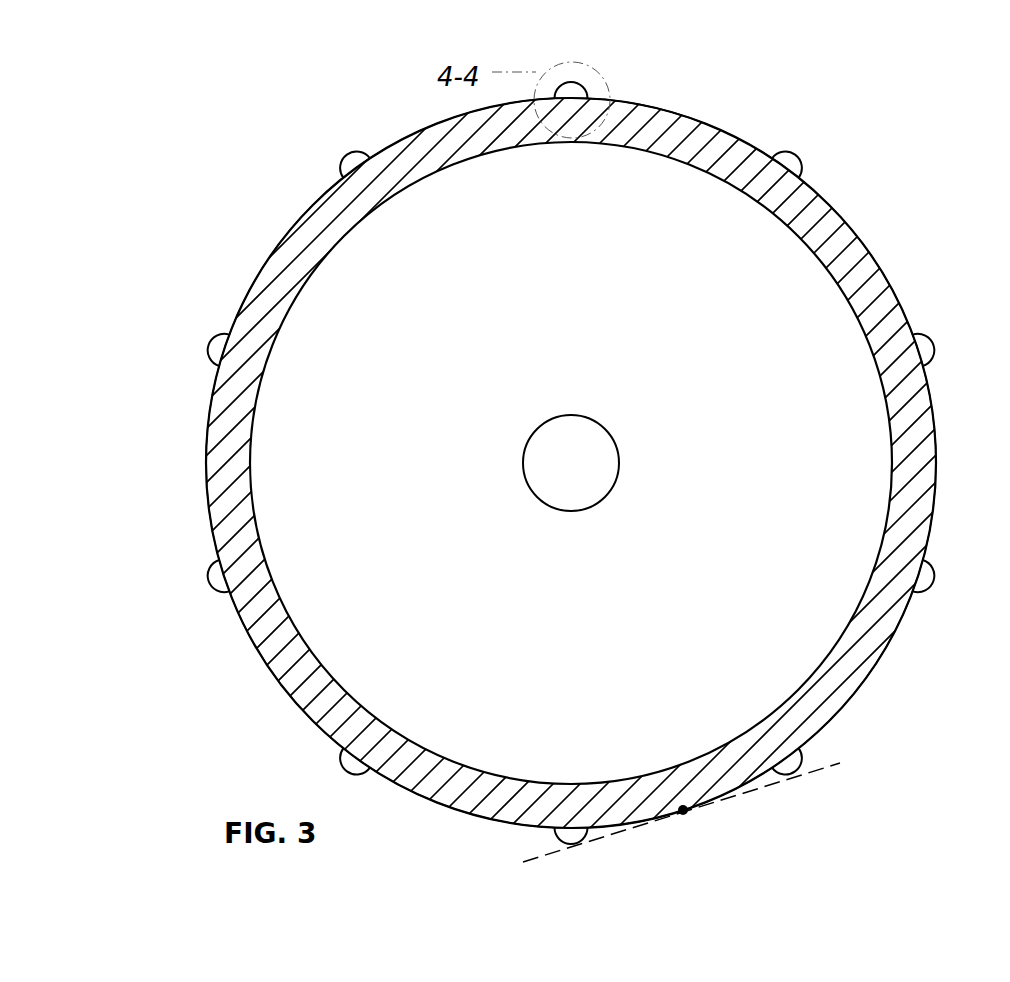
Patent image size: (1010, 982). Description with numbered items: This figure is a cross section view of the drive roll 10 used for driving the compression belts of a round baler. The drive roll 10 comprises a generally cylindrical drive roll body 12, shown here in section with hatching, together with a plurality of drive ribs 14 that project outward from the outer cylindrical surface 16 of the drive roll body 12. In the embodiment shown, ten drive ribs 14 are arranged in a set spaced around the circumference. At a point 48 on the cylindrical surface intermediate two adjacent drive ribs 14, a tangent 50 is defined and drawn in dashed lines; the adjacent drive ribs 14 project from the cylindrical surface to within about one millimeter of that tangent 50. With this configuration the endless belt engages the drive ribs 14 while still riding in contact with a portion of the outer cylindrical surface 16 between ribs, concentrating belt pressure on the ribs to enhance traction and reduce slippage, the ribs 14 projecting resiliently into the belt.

The drive roll 10 is at (947, 703).
The drive roll body 12 is at (712, 143).
The drive ribs 14 is at (574, 90).
The outer cylindrical surface 16 is at (857, 235).
The point 48 is at (686, 813).
The tangent 50 is at (828, 762).